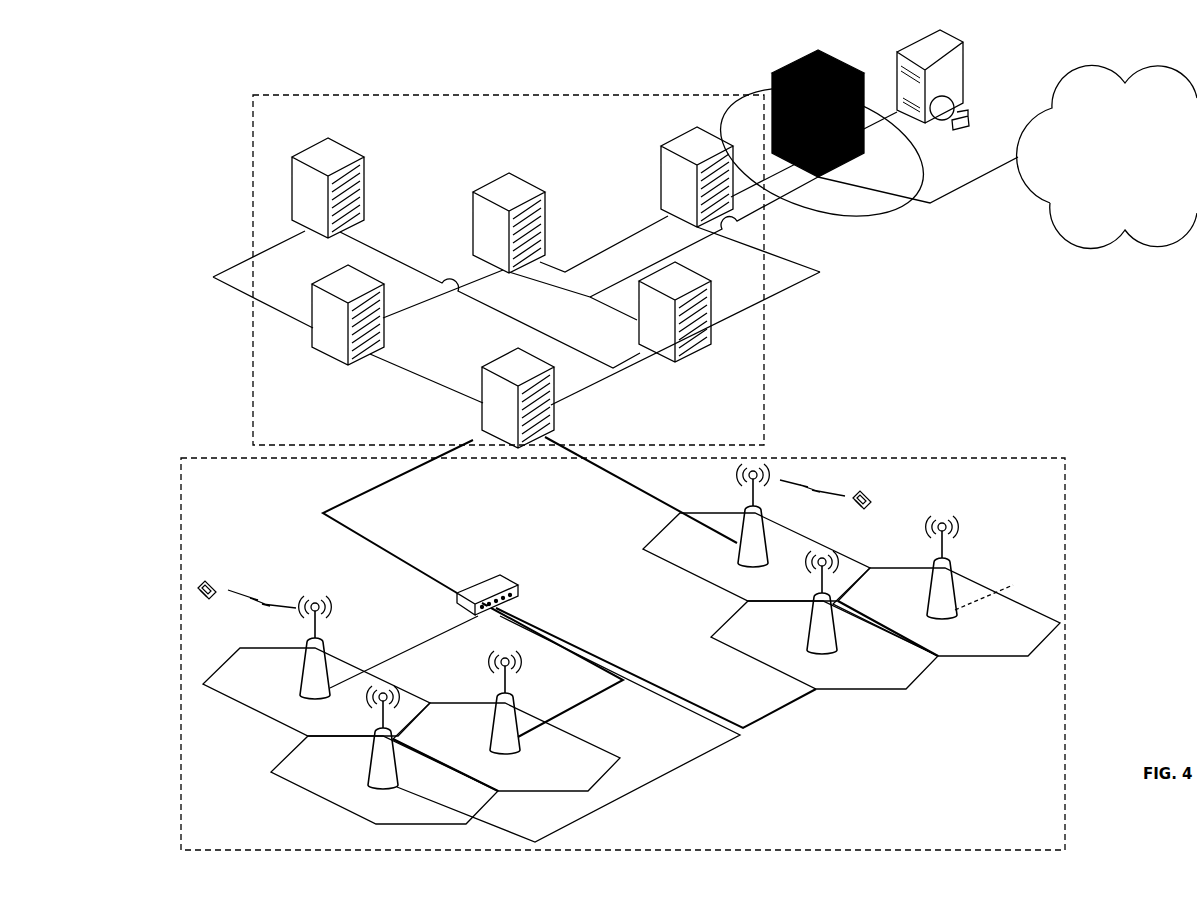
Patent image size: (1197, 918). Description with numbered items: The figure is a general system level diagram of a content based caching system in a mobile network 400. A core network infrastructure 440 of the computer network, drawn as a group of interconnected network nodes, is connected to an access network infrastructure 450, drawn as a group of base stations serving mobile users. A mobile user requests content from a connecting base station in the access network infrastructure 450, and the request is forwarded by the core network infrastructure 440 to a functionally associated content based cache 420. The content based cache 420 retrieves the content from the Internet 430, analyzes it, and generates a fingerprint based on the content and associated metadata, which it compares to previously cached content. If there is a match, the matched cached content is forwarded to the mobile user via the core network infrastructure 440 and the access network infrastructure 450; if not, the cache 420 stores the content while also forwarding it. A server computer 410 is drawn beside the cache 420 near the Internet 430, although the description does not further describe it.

The content based caching system in a mobile network 400 is at (150, 88).
The server computer 410 is at (962, 47).
The content based cache 420 is at (768, 73).
The Internet 430 is at (1085, 253).
The core network infrastructure 440 is at (765, 373).
The access network infrastructure 450 is at (1066, 513).